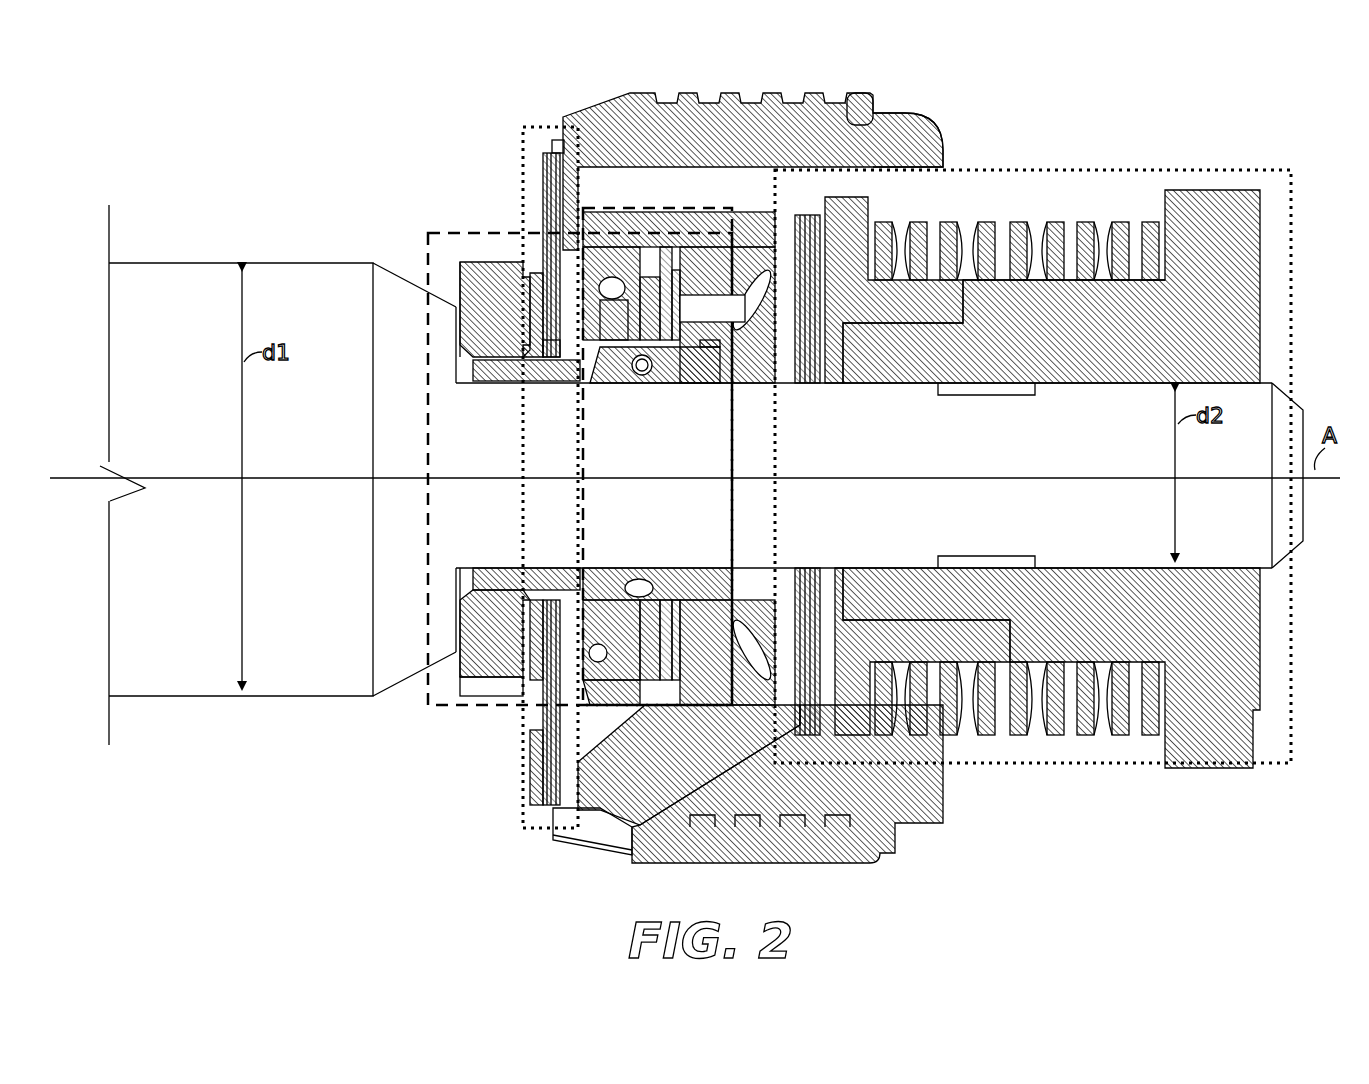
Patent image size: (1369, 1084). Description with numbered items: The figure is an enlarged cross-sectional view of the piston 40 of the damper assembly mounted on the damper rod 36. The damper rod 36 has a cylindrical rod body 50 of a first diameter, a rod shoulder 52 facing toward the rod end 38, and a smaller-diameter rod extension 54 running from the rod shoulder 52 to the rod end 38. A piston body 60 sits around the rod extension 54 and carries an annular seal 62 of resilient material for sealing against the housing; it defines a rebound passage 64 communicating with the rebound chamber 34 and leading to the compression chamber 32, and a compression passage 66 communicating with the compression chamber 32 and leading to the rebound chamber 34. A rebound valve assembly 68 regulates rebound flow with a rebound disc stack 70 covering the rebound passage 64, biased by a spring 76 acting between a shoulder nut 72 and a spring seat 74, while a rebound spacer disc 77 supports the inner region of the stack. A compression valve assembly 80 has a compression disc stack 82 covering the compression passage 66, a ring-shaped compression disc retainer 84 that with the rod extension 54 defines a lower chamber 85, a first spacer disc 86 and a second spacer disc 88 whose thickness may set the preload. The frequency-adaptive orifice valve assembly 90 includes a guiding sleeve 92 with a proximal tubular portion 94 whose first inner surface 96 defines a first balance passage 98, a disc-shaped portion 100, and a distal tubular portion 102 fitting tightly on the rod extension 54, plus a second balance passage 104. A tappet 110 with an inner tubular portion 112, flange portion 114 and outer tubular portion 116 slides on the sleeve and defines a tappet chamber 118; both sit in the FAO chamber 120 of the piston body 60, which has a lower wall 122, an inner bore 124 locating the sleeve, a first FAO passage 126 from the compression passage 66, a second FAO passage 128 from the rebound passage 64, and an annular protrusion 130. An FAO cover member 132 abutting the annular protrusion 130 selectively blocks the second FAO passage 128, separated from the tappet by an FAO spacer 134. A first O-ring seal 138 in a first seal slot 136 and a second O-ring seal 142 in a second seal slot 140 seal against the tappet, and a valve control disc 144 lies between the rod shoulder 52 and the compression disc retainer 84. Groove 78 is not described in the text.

The compression chamber 32 is at (1033, 438).
The rebound chamber 34 is at (565, 430).
The damper rod 36 is at (196, 256).
The rod end 38 is at (1304, 455).
The piston 40 is at (430, 125).
The rod body 50 is at (297, 270).
The rod shoulder 52 is at (460, 300).
The rod extension 54 is at (1100, 410).
The piston body 60 is at (920, 135).
The annular seal 62 is at (858, 97).
The rebound passage 64 is at (602, 790).
The compression passage 66 is at (740, 165).
The rebound valve assembly 68 is at (966, 170).
The rebound disc stack 70 is at (806, 226).
The shoulder nut 72 is at (1210, 200).
The spring seat 74 is at (858, 210).
The spring 76 is at (1016, 245).
The rebound spacer disc 77 is at (825, 570).
The shaft groove 78 is at (996, 388).
The compression valve assembly 80 is at (540, 127).
The compression disc stack 82 is at (546, 210).
The compression disc retainer 84 is at (535, 280).
The lower chamber 85 is at (458, 355).
The first spacer disc 86 is at (548, 358).
The second spacer disc 88 is at (548, 600).
The frequency-adaptive orifice (FAO) valve assembly 90 is at (462, 233).
The guiding sleeve 92 is at (641, 565).
The proximal tubular portion 94 is at (496, 580).
The first inner surface 96 is at (500, 380).
The first balance passage 98 is at (478, 383).
The disc-shaped portion 100 is at (688, 668).
The distal tubular portion 102 is at (690, 580).
The second balance passage 104 is at (600, 370).
The tappet 110 is at (652, 282).
The inner tubular portion 112 is at (622, 592).
The flange portion 114 is at (642, 672).
The outer tubular portion 116 is at (592, 688).
The tappet chamber 118 is at (666, 255).
The FAO chamber 120 is at (614, 278).
The lower wall 122 is at (678, 672).
The inner bore 124 is at (706, 350).
The first FAO passage 126 is at (552, 147).
The second FAO passage 128 is at (700, 310).
The annular protrusion 130 is at (678, 285).
The FAO cover member 132 is at (613, 302).
The FAO spacer 134 is at (672, 600).
The first seal slot 136 is at (642, 375).
The first O-ring seal 138 is at (652, 366).
The second seal slot 140 is at (590, 660).
The second O-ring seal 142 is at (626, 700).
The valve control disc 144 is at (470, 575).